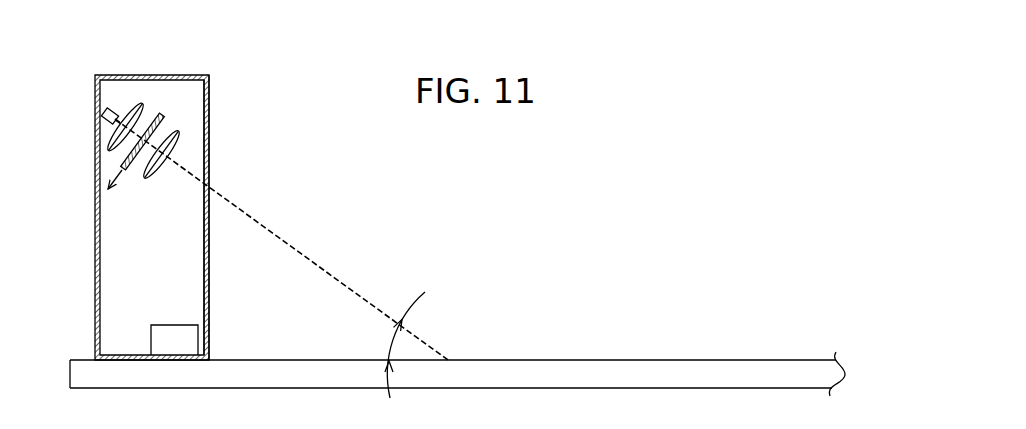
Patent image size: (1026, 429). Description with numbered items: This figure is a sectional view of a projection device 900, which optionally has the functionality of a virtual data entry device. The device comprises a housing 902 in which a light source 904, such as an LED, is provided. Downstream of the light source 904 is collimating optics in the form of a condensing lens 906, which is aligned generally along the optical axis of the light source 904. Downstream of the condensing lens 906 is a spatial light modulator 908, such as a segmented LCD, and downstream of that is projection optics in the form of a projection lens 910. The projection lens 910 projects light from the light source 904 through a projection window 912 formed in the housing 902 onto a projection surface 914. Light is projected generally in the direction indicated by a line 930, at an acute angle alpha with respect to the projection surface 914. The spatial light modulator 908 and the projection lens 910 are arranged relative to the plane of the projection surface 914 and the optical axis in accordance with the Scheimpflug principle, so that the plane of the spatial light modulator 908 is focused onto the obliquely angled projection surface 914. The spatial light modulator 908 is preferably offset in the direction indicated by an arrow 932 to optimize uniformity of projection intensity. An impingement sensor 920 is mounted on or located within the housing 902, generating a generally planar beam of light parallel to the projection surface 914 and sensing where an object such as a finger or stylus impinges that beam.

The projection device 900 is at (77, 73).
The housing 902 is at (95, 210).
The light source 904 is at (118, 108).
The condensing lens 906 is at (143, 110).
The spatial light modulator 908 is at (167, 118).
The projection lens 910 is at (180, 132).
The projection window 912 is at (210, 173).
The projection surface 914 is at (688, 360).
The impingement sensor 920 is at (162, 333).
The line indicating projection direction 930 is at (318, 263).
The arrow indicating offset direction 932 is at (120, 180).